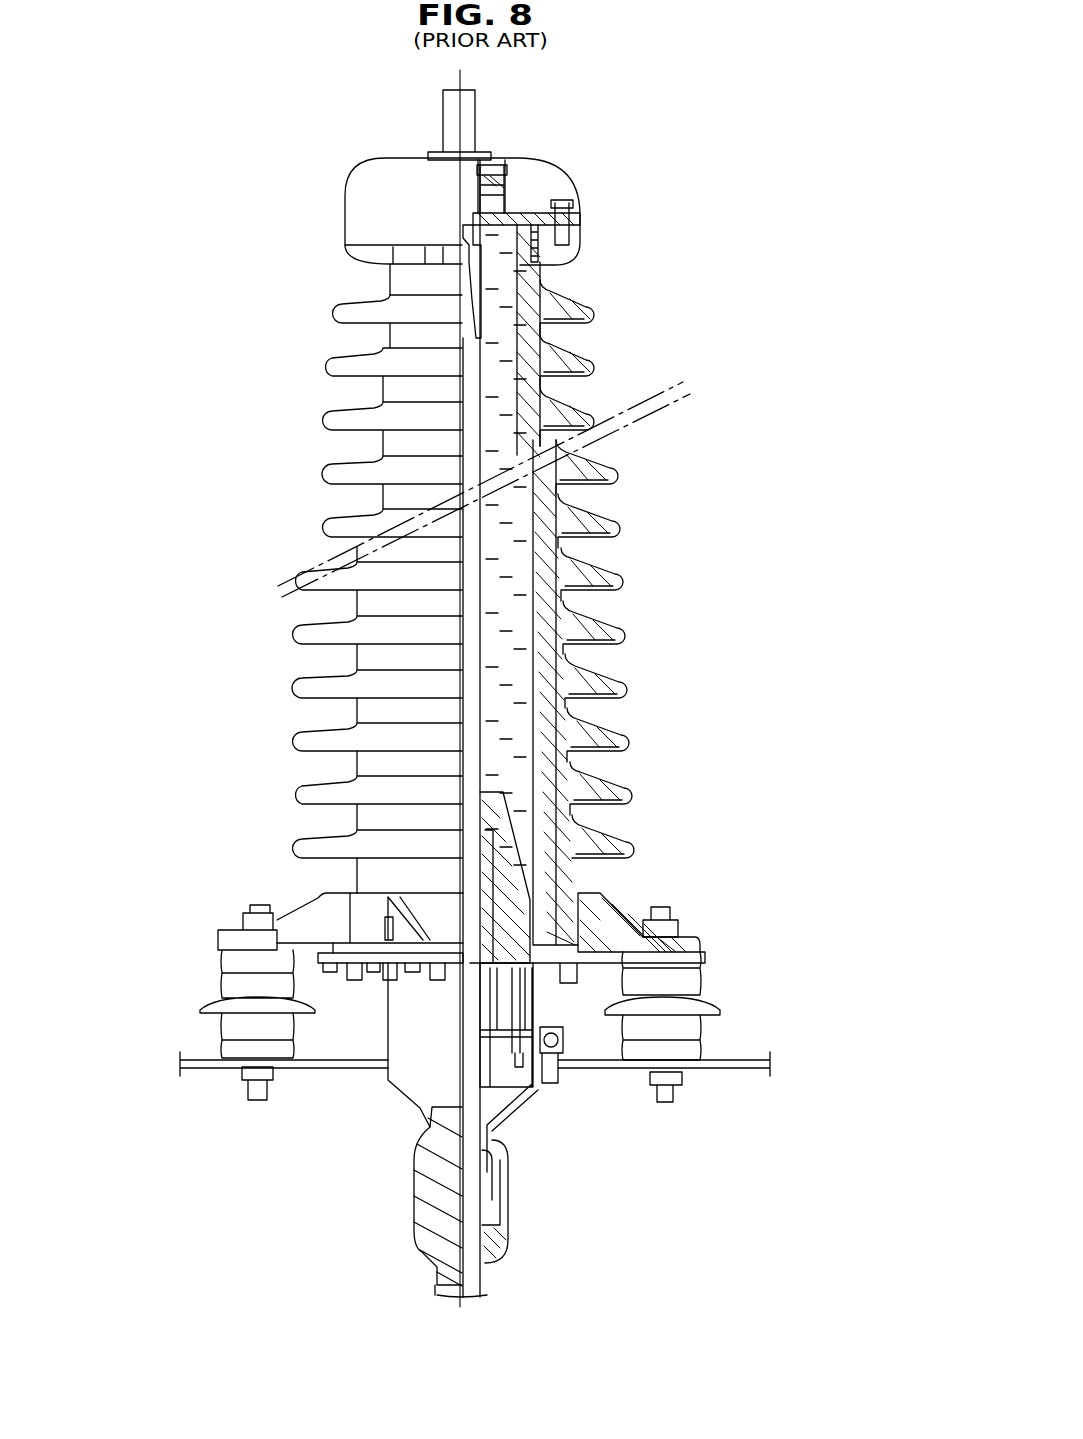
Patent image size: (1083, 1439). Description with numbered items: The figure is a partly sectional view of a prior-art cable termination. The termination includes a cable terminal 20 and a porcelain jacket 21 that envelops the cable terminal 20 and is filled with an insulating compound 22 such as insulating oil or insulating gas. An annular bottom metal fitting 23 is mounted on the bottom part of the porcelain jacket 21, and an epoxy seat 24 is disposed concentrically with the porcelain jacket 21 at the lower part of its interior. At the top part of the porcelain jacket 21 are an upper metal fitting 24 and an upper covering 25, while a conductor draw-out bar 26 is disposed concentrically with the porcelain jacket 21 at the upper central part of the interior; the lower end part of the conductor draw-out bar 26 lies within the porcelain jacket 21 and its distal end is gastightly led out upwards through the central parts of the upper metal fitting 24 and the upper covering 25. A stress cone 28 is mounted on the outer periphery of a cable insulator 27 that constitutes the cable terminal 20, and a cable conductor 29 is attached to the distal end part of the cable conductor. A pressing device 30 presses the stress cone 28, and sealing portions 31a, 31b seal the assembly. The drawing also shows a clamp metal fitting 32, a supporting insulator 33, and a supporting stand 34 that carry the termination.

The cable terminal 20 is at (398, 1106).
The porcelain jacket 21 is at (618, 577).
The insulating compound 22 is at (493, 357).
The annular bottom metal fitting 23 is at (617, 940).
The upper metal fitting 24 is at (578, 189).
The upper covering 25 is at (548, 165).
The conductor draw-out bar 26 is at (478, 106).
The cable insulator 27 is at (470, 755).
The stress cone 28 is at (490, 882).
The cable conductor 29 is at (427, 268).
The pressing device 30 is at (549, 997).
The sealing portion 31a is at (478, 300).
The sealing portion 31b is at (508, 1237).
The clamp metal fitting 32 is at (490, 213).
The supporting insulator 33 is at (687, 983).
The supporting stand 34 is at (712, 1066).